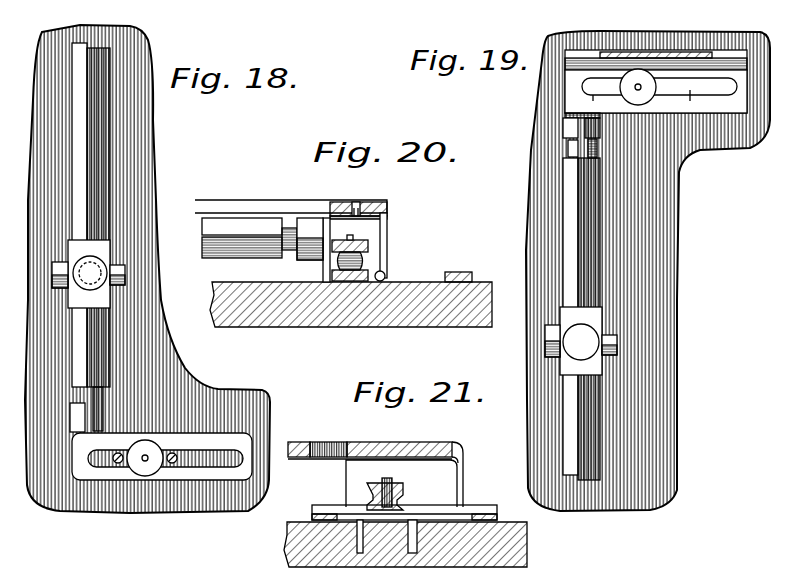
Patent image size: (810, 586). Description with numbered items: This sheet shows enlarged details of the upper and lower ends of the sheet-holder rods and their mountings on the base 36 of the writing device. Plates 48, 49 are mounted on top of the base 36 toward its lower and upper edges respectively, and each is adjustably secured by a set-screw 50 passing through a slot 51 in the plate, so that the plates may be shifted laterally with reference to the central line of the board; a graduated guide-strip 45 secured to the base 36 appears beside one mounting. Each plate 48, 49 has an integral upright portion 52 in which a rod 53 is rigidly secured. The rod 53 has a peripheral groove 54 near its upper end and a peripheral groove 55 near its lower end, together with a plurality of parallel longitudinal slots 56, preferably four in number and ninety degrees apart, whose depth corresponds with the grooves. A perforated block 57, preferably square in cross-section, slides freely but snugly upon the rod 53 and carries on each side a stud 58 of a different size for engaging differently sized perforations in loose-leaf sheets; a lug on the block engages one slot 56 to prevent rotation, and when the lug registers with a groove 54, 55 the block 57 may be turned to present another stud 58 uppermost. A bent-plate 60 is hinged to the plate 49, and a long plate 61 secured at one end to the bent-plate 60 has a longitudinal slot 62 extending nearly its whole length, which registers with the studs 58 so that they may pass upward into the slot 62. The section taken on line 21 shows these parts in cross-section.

In FIG. 19, the slot 21 is at (641, 87).
In FIG. 18, the base 36 is at (217, 387).
In FIG. 19, the base 36 is at (677, 217).
In FIG. 20, the base 36 is at (460, 318).
In FIG. 21, the base 36 is at (515, 548).
In FIG. 20, the graduated guide-strip 45 is at (460, 272).
In FIG. 18, the plate 48 is at (88, 472).
In FIG. 19, the plate 49 is at (727, 100).
In FIG. 21, the plate 49 is at (495, 515).
In FIG. 18, the set-screw 50 is at (147, 468).
In FIG. 19, the set-screw 50 is at (642, 97).
In FIG. 20, the set-screw 50 is at (365, 262).
In FIG. 21, the set-screw 50 is at (398, 495).
In FIG. 18, the slot 51 is at (207, 457).
In FIG. 19, the slot 51 is at (593, 82).
In FIG. 18, the upright portion 52 is at (100, 432).
In FIG. 19, the upright portion 52 is at (568, 113).
In FIG. 20, the upright portion 52 is at (327, 268).
In FIG. 18, the rod 53 is at (80, 172).
In FIG. 19, the rod 53 is at (592, 272).
In FIG. 20, the rod 53 is at (222, 256).
In FIG. 18, the peripheral groove 54 is at (87, 395).
In FIG. 19, the peripheral groove 55 is at (588, 148).
In FIG. 20, the peripheral groove 55 is at (290, 225).
In FIG. 18, the longitudinal slot 56 is at (90, 85).
In FIG. 19, the longitudinal slot 56 is at (582, 212).
In FIG. 20, the longitudinal slot 56 is at (226, 236).
In FIG. 18, the block 57 is at (97, 297).
In FIG. 19, the block 57 is at (597, 318).
In FIG. 18, the stud 58 is at (58, 262).
In FIG. 19, the stud 58 is at (612, 347).
In FIG. 19, the bent-plate 60 is at (667, 53).
In FIG. 20, the bent-plate 60 is at (388, 228).
In FIG. 21, the bent-plate 60 is at (447, 492).
In FIG. 20, the long plate 61 is at (342, 203).
In FIG. 21, the long plate 61 is at (415, 430).
In FIG. 20, the longitudinal slot 62 is at (243, 190).
In FIG. 21, the longitudinal slot 62 is at (318, 442).